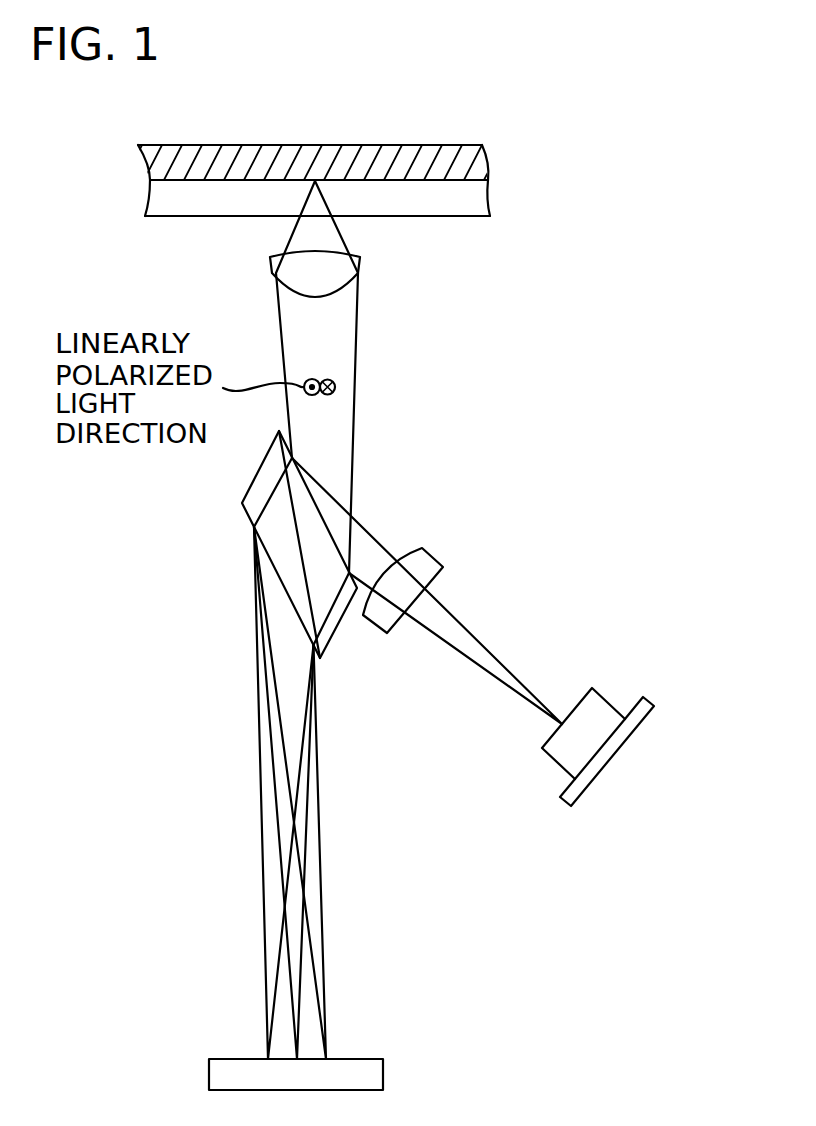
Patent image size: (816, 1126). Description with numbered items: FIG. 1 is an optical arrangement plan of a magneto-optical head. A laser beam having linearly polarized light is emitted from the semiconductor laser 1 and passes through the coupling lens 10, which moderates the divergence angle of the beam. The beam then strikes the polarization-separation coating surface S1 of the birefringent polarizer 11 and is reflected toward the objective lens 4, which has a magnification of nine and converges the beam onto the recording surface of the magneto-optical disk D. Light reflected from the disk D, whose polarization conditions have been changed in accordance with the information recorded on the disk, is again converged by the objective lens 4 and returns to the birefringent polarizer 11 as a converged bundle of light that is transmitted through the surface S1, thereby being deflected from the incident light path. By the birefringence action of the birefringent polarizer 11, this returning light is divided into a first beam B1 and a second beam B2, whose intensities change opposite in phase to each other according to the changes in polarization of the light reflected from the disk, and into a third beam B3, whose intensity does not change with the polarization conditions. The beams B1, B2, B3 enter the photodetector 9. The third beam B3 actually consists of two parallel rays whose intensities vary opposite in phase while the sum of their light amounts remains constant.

The magneto-optical disk D is at (420, 143).
The objective lens 4 is at (342, 267).
The birefringent polarizer 11 is at (307, 503).
The polarization-separation coating surface S1 is at (320, 508).
The coupling lens 10 is at (423, 560).
The semiconductor laser 1 is at (600, 710).
The photodetector 9 is at (377, 1073).
The first beam B1 is at (313, 957).
The second beam B2 is at (275, 992).
The third beam B3 is at (293, 1003).